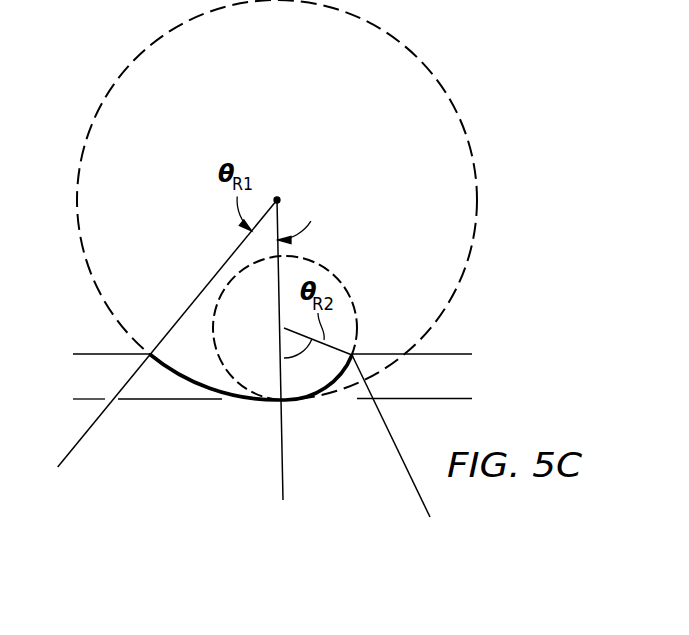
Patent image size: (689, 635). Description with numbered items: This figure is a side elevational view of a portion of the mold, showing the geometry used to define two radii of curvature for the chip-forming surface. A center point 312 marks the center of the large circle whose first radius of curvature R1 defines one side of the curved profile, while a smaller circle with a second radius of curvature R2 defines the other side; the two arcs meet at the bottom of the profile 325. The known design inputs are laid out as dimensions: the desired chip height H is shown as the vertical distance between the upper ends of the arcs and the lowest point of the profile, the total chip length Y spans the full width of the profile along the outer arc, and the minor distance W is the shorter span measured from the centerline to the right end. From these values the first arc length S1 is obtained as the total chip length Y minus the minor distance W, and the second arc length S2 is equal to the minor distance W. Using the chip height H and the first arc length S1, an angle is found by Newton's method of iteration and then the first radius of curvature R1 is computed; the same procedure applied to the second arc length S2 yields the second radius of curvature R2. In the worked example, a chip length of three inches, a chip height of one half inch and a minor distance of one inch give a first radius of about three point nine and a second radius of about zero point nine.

The center of curvature of radius R1 312 is at (282, 200).
The groove bottom surface 325 is at (281, 417).
The first radius of curvature R1 is at (195, 296).
The second radius of curvature R2 is at (348, 336).
The chip height H is at (84, 354).
The minor distance W is at (388, 430).
The first arc length S1 is at (282, 492).
The second arc length S2 is at (404, 463).
The total chip length Y is at (423, 502).